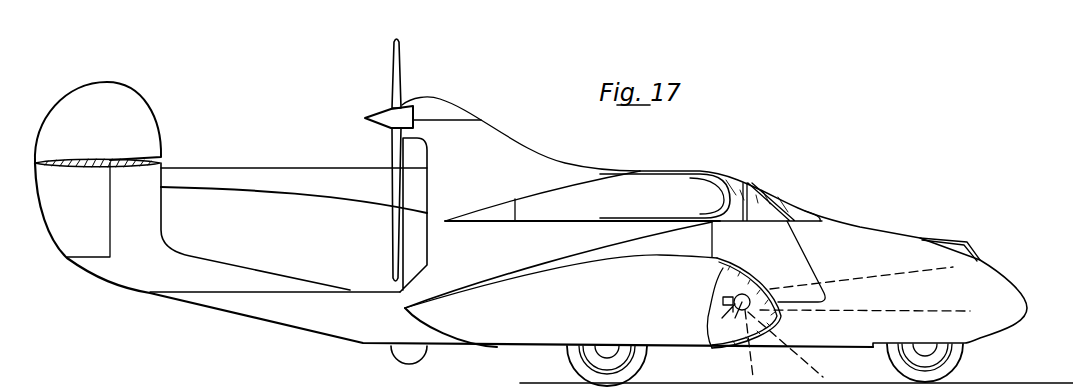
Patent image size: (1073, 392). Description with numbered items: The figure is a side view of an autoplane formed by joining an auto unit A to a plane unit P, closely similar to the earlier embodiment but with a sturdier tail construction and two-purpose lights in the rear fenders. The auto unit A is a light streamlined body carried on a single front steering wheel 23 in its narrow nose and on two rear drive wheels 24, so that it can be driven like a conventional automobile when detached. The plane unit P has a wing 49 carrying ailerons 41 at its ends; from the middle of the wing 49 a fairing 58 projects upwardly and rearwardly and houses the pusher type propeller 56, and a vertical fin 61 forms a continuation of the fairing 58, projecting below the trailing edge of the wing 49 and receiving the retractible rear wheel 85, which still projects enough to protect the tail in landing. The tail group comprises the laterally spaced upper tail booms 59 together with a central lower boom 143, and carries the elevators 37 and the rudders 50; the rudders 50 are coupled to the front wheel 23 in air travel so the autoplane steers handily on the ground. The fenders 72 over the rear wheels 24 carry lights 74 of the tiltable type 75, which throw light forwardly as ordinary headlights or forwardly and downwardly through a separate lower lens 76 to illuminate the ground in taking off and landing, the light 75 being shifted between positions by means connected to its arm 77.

The rudder 50 is at (140, 96).
The elevator 37 is at (60, 168).
The central lower boom 143 is at (258, 313).
The tail boom 59 is at (257, 173).
The propeller 56 is at (392, 235).
The vertical fin 61 is at (432, 243).
The fairing 58 is at (483, 133).
The plane unit P is at (520, 158).
The aileron 41 is at (492, 228).
The wing 49 is at (648, 180).
The auto unit A is at (872, 232).
The fender 72 is at (648, 263).
The light 74 is at (777, 287).
The tiltable light 75 is at (752, 285).
The arm 77 is at (737, 310).
The lower lens 76 is at (760, 327).
The rear wheel 85 is at (428, 352).
The rear drive wheel 24 is at (640, 362).
The front steering wheel 23 is at (960, 358).